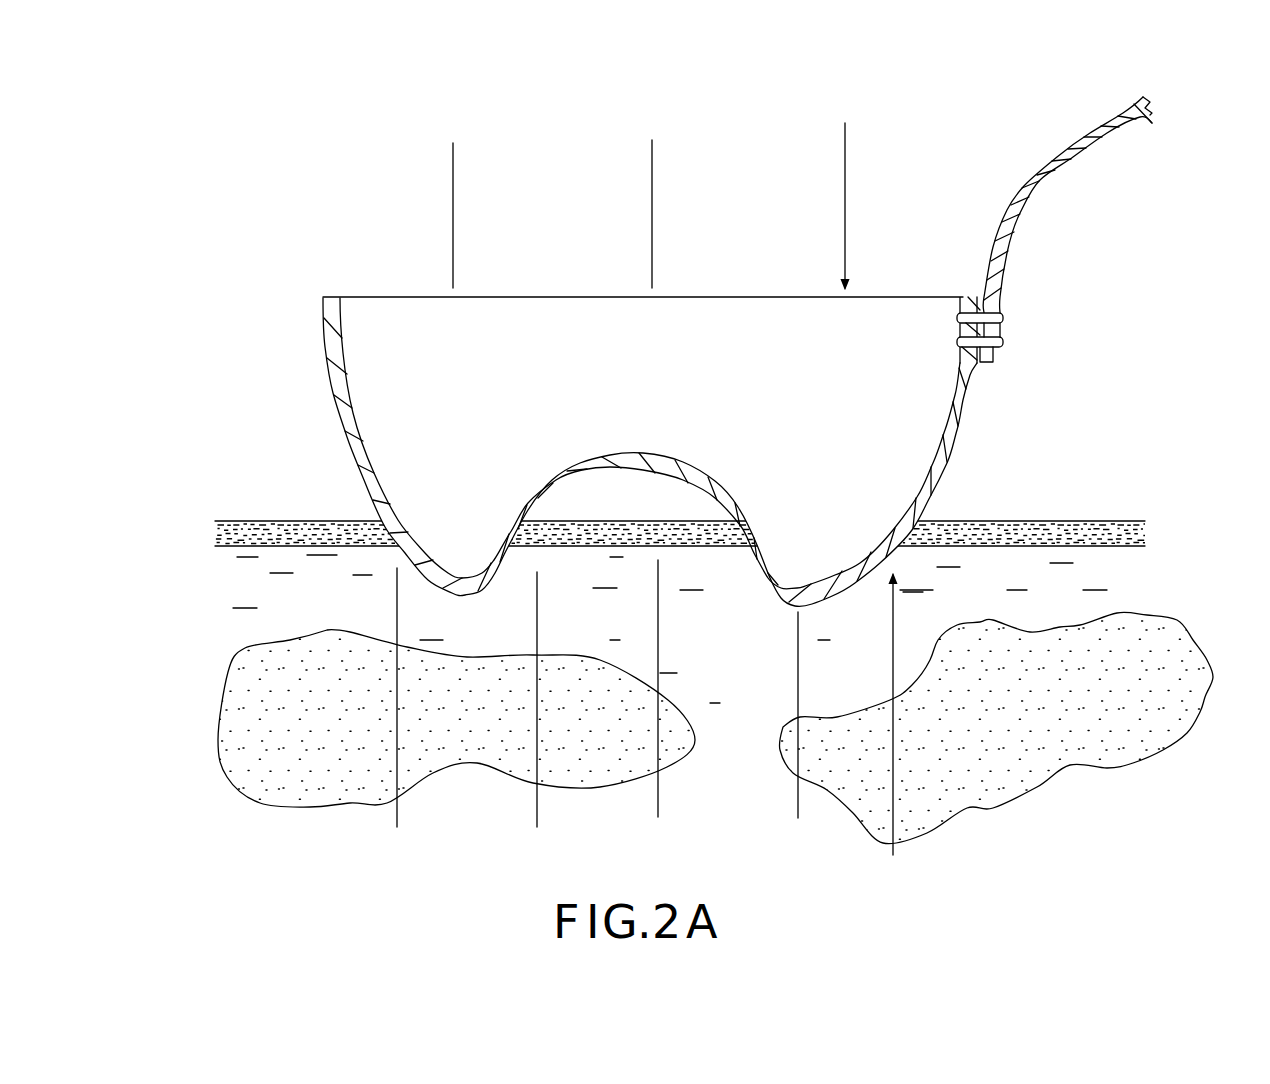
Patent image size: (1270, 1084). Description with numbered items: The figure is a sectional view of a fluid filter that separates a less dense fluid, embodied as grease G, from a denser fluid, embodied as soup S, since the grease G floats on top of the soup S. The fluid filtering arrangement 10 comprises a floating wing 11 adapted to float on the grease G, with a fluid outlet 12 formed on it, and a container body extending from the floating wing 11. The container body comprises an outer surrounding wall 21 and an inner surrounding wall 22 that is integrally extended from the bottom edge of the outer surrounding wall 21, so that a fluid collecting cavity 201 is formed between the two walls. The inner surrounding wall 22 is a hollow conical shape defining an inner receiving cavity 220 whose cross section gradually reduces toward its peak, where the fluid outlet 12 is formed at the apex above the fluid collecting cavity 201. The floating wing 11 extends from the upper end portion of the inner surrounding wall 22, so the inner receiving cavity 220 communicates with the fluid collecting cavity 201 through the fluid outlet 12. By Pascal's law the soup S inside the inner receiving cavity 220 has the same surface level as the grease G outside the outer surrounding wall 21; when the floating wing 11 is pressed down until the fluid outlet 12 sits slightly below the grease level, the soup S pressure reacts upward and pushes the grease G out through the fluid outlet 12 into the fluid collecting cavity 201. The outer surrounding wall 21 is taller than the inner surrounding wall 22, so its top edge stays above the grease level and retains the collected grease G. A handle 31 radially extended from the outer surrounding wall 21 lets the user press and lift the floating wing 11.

The fluid filtering arrangement 10 is at (543, 213).
The floating wing 11 is at (607, 460).
The fluid outlet 12 is at (647, 443).
The outer surrounding wall 21 is at (337, 393).
The inner surrounding wall 22 is at (560, 488).
The inner receiving cavity 220 is at (577, 562).
The fluid collecting cavity 201 is at (807, 447).
The handle 31 is at (1018, 217).
The grease G is at (670, 533).
The soup S is at (683, 577).